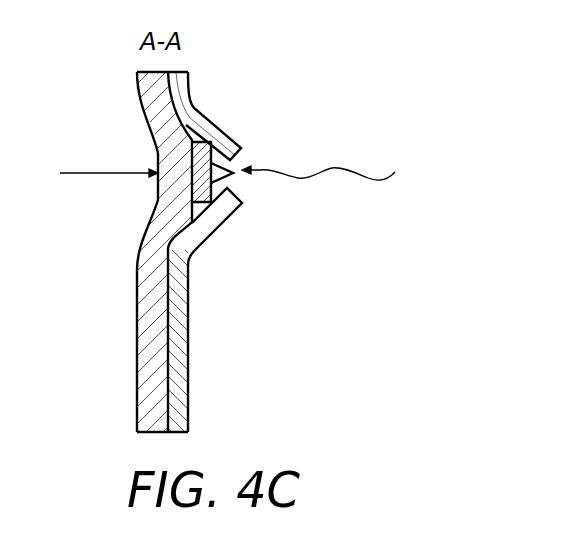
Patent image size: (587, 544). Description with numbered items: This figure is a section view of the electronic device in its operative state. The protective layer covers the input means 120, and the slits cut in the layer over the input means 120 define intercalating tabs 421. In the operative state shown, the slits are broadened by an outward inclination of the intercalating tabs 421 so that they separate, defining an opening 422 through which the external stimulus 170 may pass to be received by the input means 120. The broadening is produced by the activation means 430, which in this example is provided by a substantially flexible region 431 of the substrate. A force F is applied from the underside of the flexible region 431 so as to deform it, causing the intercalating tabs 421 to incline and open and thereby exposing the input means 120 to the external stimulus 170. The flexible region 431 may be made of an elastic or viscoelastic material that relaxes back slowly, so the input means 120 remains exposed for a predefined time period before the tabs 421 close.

The input means 120 is at (215, 223).
The external stimulus 170 is at (332, 167).
The intercalating tabs 421 is at (231, 131).
The opening 422 is at (243, 187).
The activation means 430 is at (87, 178).
The flexible region of the substrate 431 is at (158, 153).
The flow direction F is at (99, 172).